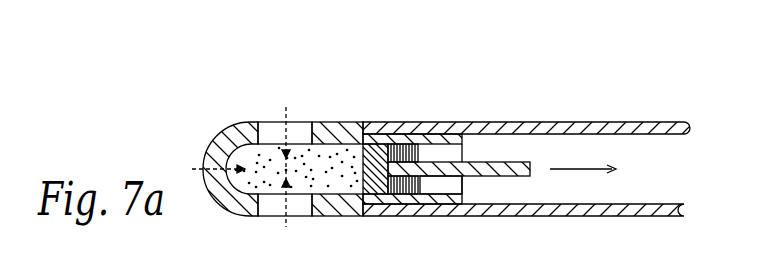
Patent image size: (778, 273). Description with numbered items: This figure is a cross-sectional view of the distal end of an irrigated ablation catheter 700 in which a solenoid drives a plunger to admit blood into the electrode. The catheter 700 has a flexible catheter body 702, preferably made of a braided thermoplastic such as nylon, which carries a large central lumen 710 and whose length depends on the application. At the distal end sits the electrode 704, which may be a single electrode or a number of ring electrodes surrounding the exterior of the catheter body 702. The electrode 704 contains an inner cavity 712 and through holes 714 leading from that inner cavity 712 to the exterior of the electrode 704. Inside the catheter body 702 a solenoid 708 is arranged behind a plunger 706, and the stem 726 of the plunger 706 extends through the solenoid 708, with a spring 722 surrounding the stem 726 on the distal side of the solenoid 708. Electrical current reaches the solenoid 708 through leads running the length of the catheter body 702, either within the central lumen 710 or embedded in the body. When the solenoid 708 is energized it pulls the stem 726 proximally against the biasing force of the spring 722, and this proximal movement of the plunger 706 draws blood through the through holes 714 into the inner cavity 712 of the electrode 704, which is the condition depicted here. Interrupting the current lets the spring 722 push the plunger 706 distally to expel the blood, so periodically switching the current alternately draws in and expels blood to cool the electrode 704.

The catheter 700 is at (424, 50).
The catheter body 702 is at (537, 121).
The electrode 704 is at (212, 214).
The plunger 706 is at (367, 142).
The solenoid 708 is at (466, 152).
The central lumen 710 is at (584, 146).
The inner cavity 712 is at (268, 186).
The through holes 714 is at (293, 116).
The spring 722 is at (419, 145).
The stem 726 is at (468, 185).